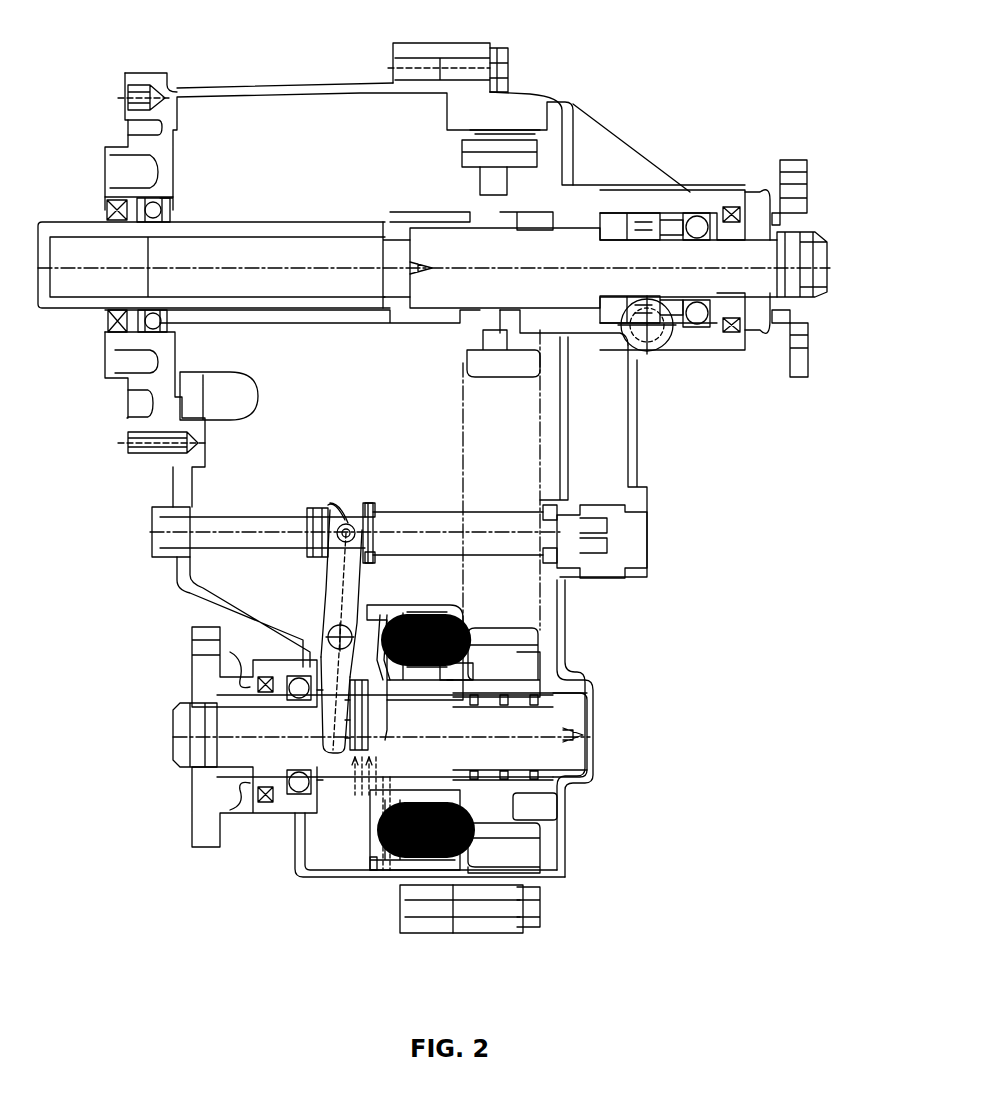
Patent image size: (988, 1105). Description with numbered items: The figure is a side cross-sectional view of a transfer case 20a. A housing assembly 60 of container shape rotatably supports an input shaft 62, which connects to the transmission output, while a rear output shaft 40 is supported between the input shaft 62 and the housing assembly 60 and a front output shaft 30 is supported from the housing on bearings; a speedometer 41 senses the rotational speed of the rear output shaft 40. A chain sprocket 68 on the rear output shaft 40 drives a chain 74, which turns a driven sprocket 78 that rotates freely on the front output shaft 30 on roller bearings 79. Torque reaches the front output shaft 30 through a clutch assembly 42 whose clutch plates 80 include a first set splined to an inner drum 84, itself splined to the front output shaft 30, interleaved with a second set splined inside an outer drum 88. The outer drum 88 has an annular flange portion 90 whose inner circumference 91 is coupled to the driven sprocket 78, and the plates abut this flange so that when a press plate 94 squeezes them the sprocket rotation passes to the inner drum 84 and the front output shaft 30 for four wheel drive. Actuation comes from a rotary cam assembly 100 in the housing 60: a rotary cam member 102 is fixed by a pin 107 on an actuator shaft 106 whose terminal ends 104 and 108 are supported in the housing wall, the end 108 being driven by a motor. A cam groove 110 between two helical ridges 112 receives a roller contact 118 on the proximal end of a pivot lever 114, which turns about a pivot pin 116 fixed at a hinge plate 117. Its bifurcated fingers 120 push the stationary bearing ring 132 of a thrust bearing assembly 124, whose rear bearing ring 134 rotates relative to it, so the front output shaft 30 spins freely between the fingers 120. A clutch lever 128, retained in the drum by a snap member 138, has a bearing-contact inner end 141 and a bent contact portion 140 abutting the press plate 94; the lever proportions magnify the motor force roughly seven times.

The transfer case 20a is at (629, 59).
The housing assembly 60 is at (292, 82).
The input shaft 62 is at (76, 230).
The chain sprocket 68 is at (470, 175).
The rear output shaft 40 is at (640, 258).
The speedometer 41 is at (660, 352).
The chain 74 is at (478, 402).
The rotary cam assembly 100 is at (265, 483).
The rotary cam member 102 is at (362, 500).
The terminal end 104 is at (170, 530).
The actuator shaft 106 is at (437, 522).
The pin 107 is at (310, 530).
The terminal end 108 is at (578, 537).
The cam groove 110 is at (347, 524).
The helical teeth or ridges 112 is at (325, 525).
The pivot lever 114 is at (330, 573).
The pivot pin 116 is at (328, 645).
The hinge plate 117 is at (315, 623).
The roller contact 118 is at (370, 530).
The fingers 120 is at (323, 728).
The thrust bearing assembly 124 is at (356, 772).
The clutch lever 128 is at (390, 680).
The stationary bearing ring 132 is at (380, 720).
The rear bearing ring 134 is at (380, 738).
The snap member 138 is at (377, 856).
The bent contact portion 140 is at (442, 616).
The bearing-contact inner end 141 is at (372, 700).
The outer drum 88 is at (390, 613).
The clutch assembly 42 is at (410, 606).
The inner drum 84 is at (432, 690).
The clutch plates 80 is at (472, 650).
The roller bearings 79 is at (562, 704).
The driven sprocket 78 is at (520, 835).
The inner circumference 91 is at (458, 815).
The annular flange portion 90 is at (455, 845).
The press plate 94 is at (400, 850).
The front output shaft 30 is at (232, 747).